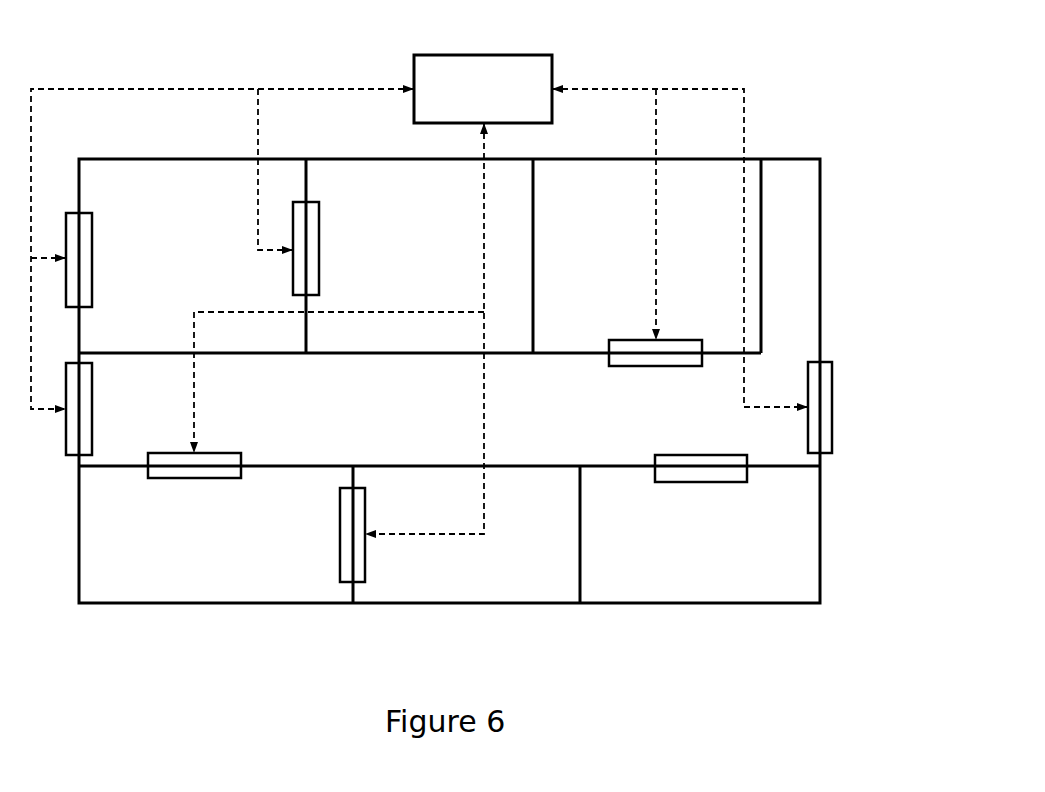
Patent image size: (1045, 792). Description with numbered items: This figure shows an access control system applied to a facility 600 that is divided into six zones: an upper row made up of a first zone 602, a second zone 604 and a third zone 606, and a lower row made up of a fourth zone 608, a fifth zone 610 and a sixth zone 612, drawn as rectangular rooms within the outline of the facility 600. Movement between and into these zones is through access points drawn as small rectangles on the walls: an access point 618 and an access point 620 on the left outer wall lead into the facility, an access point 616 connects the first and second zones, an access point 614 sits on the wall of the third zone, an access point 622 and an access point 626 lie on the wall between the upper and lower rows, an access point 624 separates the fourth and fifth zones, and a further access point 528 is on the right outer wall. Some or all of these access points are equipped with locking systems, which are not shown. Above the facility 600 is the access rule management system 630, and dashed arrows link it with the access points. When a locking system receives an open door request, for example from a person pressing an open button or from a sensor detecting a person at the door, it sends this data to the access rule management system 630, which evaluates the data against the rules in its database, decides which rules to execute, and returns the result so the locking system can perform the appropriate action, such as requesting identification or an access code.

The facility 600 is at (777, 155).
The zone 602 is at (158, 188).
The zone 604 is at (413, 183).
The zone 606 is at (626, 183).
The zone 608 is at (174, 581).
The zone 610 is at (465, 581).
The zone 612 is at (690, 581).
The access point 614 is at (679, 340).
The access point 616 is at (320, 293).
The access point 618 is at (92, 285).
The access point 620 is at (92, 425).
The access point 622 is at (213, 452).
The access point 624 is at (365, 557).
The access point 626 is at (688, 483).
The vent 528 is at (832, 362).
The access rule management system 630 is at (552, 81).